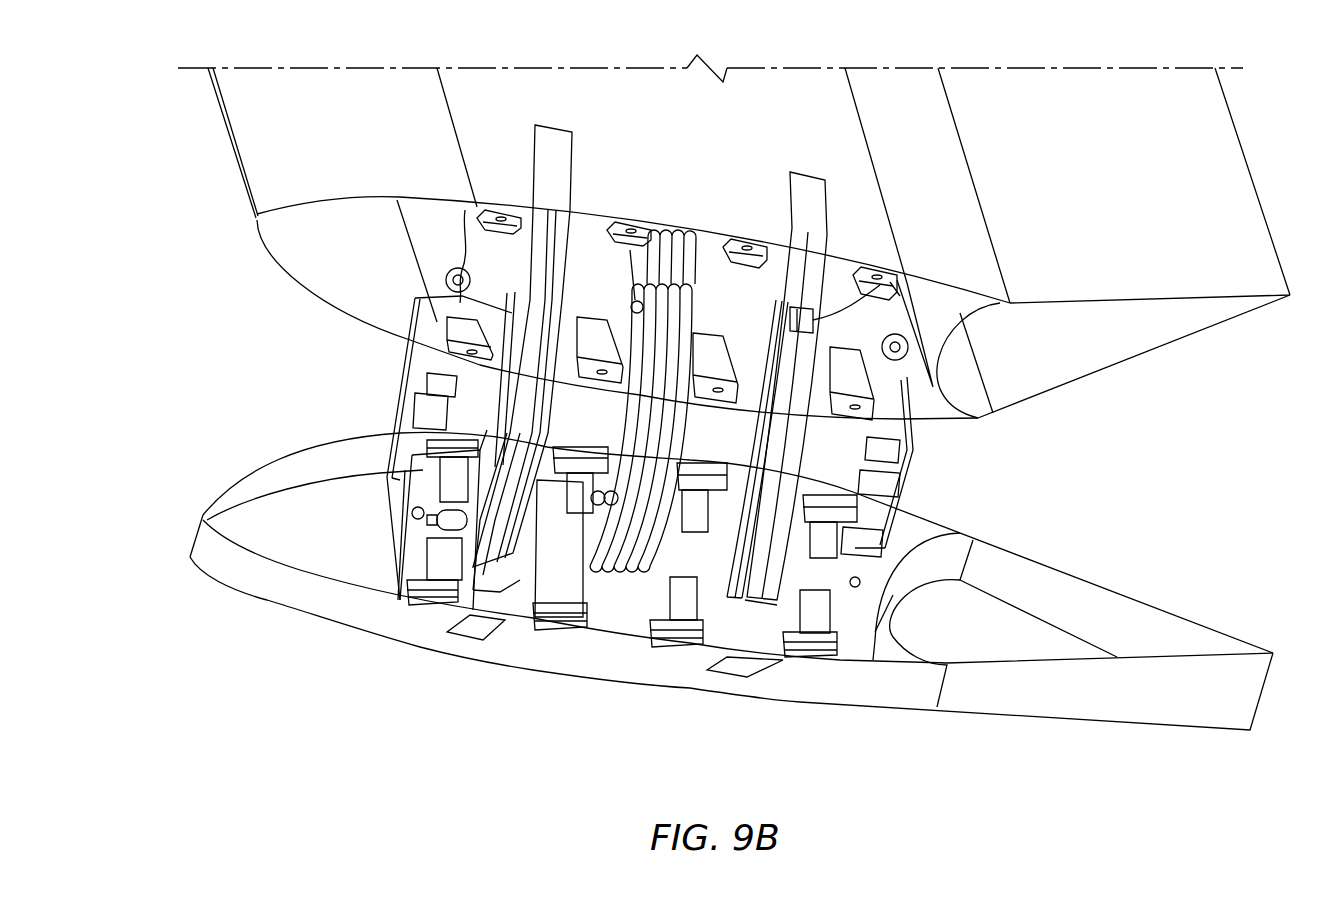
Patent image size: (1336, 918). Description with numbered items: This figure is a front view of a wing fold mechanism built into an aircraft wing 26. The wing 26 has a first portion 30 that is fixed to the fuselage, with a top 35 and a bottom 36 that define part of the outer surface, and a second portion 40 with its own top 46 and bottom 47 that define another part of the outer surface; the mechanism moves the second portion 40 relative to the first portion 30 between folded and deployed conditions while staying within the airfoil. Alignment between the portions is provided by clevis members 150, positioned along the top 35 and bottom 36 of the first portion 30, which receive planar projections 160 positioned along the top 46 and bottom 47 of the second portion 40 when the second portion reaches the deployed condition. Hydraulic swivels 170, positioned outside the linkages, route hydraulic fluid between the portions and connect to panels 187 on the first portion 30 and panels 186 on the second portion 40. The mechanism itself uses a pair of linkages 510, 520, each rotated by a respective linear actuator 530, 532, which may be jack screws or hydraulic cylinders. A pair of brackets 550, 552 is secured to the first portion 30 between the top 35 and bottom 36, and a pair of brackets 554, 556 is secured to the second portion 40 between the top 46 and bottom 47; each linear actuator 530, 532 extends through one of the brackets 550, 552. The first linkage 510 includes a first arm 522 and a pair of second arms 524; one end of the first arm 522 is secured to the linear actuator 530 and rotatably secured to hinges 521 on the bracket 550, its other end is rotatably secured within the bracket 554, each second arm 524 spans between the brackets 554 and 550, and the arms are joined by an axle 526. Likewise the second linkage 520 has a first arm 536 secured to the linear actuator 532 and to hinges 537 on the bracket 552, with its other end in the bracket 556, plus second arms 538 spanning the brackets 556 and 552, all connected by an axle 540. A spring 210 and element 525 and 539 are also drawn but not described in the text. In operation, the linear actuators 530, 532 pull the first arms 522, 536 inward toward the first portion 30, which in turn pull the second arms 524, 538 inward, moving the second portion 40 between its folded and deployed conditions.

The wing 26 is at (212, 610).
The first portion 30 is at (197, 538).
The top 35 is at (1088, 708).
The bottom 36 is at (1128, 592).
The second portion 40 is at (252, 135).
The top 46 is at (1142, 355).
The bottom 47 is at (1171, 242).
The clevis member 150 is at (553, 628).
The projection 160 is at (633, 233).
The hydraulic swivel 170 is at (376, 386).
The panel 186 is at (420, 241).
The panel 187 is at (408, 547).
The spring 210 is at (677, 270).
The first linkage 510 is at (507, 389).
The second linkage 520 is at (860, 498).
The hinges 521 is at (513, 542).
The first arm 522 is at (507, 517).
The second arm 524 is at (423, 297).
The guide block 525 is at (555, 292).
The axle 526 is at (545, 425).
The linear actuator 530 is at (415, 512).
The linear actuator 532 is at (690, 627).
The first arm 536 is at (760, 605).
The hinges 537 is at (770, 597).
The second arm 538 is at (800, 315).
The cable 539 is at (812, 313).
The axle 540 is at (801, 488).
The bracket 550 is at (510, 583).
The bracket 552 is at (747, 483).
The bracket 554 is at (532, 215).
The bracket 556 is at (768, 287).